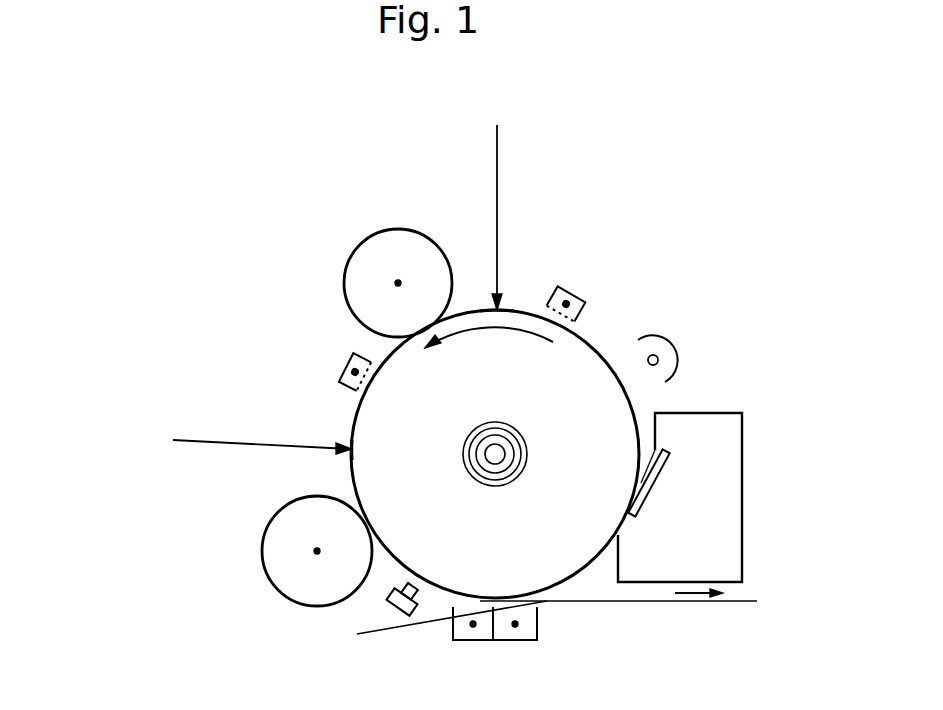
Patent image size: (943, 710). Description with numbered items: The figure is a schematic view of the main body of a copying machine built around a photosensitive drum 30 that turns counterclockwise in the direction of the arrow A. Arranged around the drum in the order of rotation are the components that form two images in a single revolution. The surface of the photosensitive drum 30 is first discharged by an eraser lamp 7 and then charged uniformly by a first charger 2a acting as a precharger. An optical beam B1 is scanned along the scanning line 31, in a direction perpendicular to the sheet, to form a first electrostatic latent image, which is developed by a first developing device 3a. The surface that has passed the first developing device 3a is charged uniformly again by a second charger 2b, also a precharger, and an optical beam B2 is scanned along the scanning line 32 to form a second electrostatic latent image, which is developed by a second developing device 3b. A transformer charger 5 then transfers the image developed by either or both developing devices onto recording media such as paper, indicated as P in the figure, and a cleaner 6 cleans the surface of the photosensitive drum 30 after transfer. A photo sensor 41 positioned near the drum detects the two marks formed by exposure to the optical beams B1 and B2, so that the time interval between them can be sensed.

The photosensitive drum 30 is at (596, 350).
The scanning line 31 is at (498, 310).
The scanning line 32 is at (352, 448).
The first charger 2a is at (573, 290).
The second charger 2b is at (338, 358).
The first developing device 3a is at (378, 229).
The second developing device 3b is at (265, 567).
The transformer charger 5 is at (506, 642).
The cleaner 6 is at (742, 490).
The eraser lamp 7 is at (676, 356).
The photo sensor 41 is at (388, 601).
The arrow A is at (485, 357).
The optical beam B1 is at (500, 166).
The optical beam B2 is at (229, 443).
The recording paper P is at (735, 605).